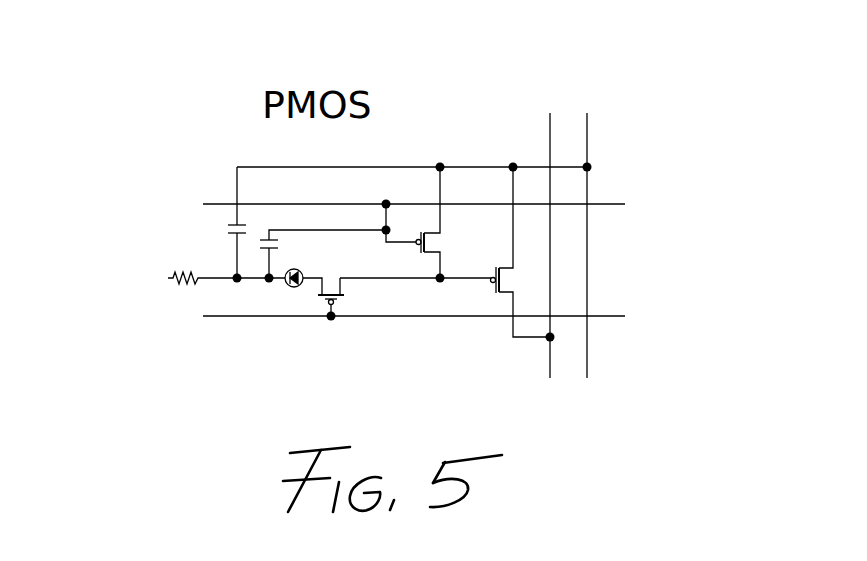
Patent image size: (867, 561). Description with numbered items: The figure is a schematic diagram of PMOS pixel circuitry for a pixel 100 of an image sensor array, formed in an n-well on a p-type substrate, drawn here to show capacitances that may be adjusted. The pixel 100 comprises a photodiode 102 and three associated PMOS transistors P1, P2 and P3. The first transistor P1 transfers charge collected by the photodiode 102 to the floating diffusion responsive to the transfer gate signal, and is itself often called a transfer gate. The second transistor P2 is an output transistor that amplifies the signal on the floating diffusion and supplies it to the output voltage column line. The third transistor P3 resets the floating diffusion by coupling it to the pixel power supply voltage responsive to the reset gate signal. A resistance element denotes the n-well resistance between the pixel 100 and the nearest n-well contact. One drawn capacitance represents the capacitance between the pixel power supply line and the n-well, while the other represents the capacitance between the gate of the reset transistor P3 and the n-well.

The pixel 100 is at (715, 83).
The photodiode 102 is at (289, 288).
The first transistor P1 is at (329, 286).
The second transistor P2 is at (521, 252).
The third transistor P3 is at (430, 222).